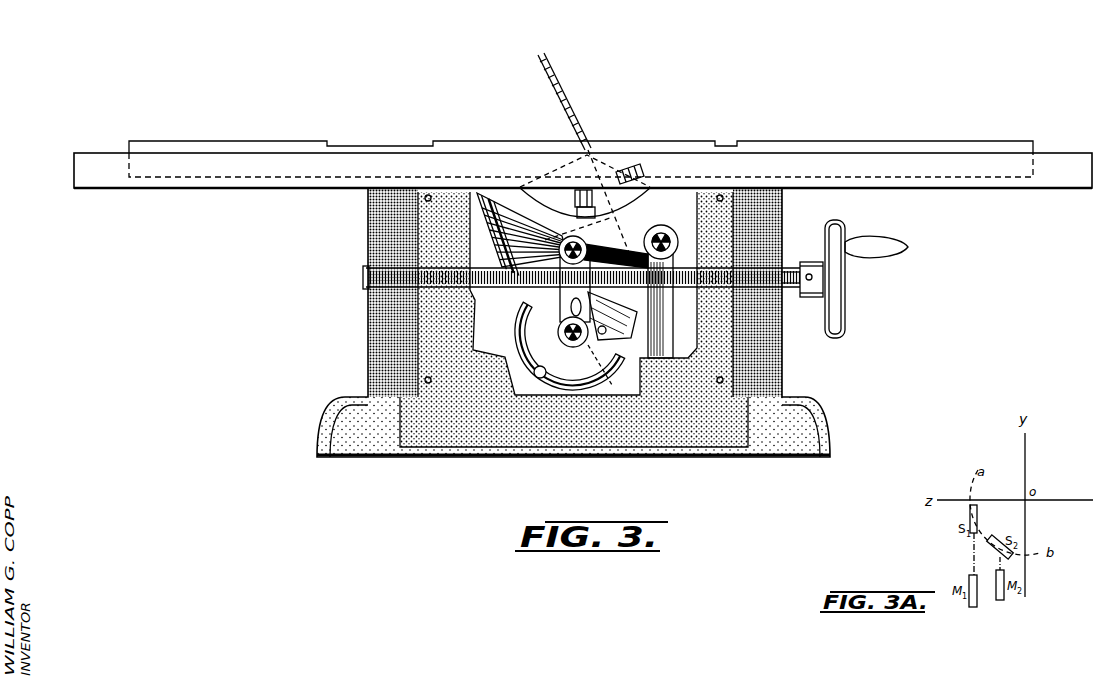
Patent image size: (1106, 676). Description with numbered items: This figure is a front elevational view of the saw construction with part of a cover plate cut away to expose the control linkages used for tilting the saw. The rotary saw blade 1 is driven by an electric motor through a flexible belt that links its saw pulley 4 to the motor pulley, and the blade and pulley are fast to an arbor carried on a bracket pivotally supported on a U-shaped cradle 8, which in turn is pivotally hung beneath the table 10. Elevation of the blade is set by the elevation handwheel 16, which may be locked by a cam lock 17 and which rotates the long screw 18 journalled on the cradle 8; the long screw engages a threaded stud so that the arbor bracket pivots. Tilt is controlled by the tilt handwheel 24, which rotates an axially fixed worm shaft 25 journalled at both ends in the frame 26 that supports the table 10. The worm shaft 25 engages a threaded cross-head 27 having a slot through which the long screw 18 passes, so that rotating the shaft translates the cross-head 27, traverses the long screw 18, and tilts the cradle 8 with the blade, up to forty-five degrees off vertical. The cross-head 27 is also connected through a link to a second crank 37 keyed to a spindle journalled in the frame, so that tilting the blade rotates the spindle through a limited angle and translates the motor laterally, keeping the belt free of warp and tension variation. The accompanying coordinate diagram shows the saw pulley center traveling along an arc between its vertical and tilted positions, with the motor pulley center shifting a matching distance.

The rotary saw blade 1 is at (585, 150).
The saw pulley 4 is at (494, 236).
The U-shaped cradle 8 is at (622, 228).
The table 10 is at (918, 148).
The elevation handwheel 16 is at (517, 338).
The cam lock 17 is at (598, 337).
The long screw 18 is at (573, 365).
The tilt handwheel 24 is at (845, 291).
The worm shaft 25 is at (479, 293).
The frame 26 is at (368, 341).
The threaded cross-head 27 is at (562, 332).
The second crank 37 is at (665, 226).